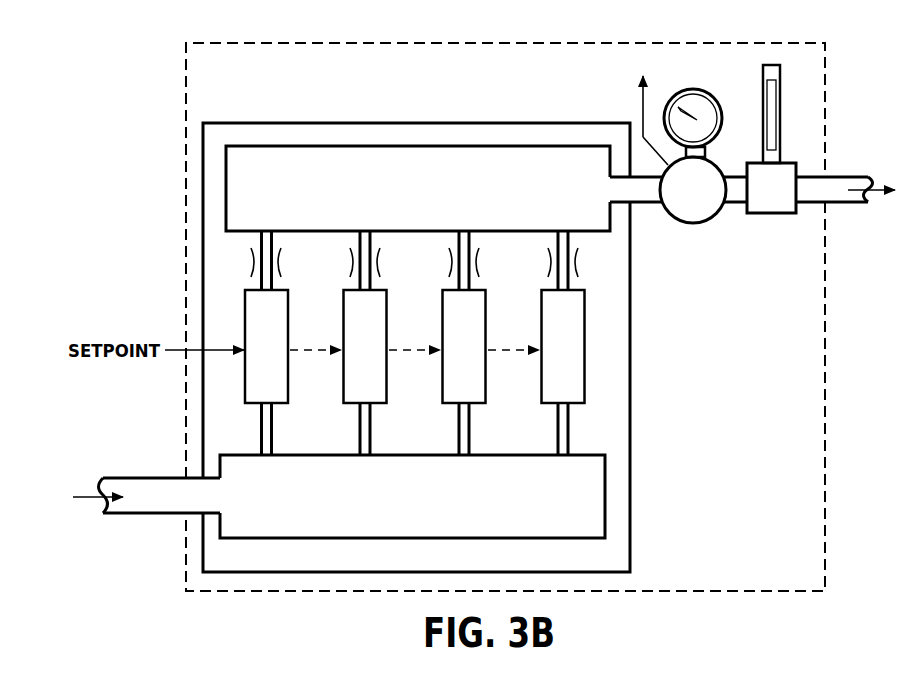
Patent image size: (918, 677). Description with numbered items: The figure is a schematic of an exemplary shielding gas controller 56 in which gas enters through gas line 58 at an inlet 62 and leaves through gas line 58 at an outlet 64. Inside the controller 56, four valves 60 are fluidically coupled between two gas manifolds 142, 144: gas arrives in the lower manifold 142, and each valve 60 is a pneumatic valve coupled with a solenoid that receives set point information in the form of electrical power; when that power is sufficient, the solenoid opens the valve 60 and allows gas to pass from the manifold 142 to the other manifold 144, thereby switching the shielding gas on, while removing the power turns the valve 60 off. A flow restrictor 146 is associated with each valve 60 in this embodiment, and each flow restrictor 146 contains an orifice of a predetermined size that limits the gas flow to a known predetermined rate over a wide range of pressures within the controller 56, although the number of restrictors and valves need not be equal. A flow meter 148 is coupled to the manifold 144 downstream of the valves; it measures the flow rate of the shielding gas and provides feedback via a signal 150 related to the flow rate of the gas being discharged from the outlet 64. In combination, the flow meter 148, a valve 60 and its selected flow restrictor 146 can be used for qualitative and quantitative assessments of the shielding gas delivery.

The shielding gas controller 56 is at (183, 78).
The gas line 58 is at (484, 353).
The valve 60 is at (277, 364).
The inlet 62 is at (200, 514).
The outlet 64 is at (830, 202).
The gas manifold 142 is at (400, 507).
The gas manifold 144 is at (416, 192).
The flow restrictor 146 is at (251, 261).
The flow meter 148 is at (681, 202).
The signal 150 is at (643, 103).